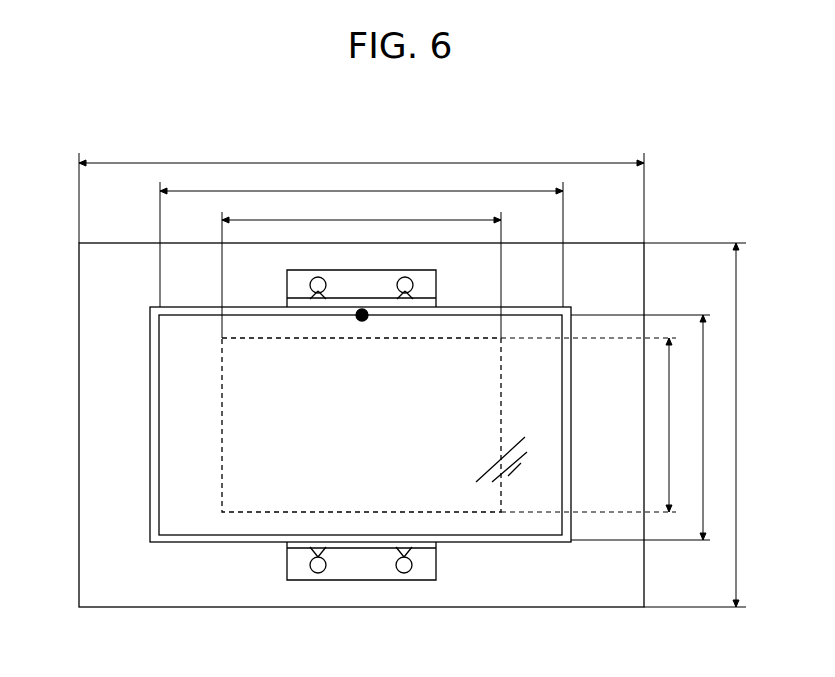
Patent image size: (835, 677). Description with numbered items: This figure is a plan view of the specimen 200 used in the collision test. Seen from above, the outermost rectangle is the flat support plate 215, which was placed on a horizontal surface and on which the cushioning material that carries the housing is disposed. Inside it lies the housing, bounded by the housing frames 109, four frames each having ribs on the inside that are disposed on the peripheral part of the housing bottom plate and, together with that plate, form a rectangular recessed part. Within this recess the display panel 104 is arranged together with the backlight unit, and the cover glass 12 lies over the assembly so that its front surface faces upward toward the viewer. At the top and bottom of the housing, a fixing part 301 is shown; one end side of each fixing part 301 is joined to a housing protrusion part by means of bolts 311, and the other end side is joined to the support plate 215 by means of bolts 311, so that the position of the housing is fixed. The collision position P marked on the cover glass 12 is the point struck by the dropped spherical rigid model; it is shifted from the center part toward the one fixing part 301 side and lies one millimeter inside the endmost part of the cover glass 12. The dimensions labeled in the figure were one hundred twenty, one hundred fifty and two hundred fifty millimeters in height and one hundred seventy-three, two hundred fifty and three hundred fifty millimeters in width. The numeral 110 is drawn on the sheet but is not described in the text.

The specimen 200 is at (684, 178).
The support plate 215 is at (118, 352).
The outer frame 110 is at (150, 453).
The housing frame 109 is at (195, 352).
The cover glass 12 is at (185, 410).
The display panel 104 is at (222, 490).
The fixing part 301 is at (392, 455).
The bolt 311 is at (308, 581).
The collision position P is at (362, 318).